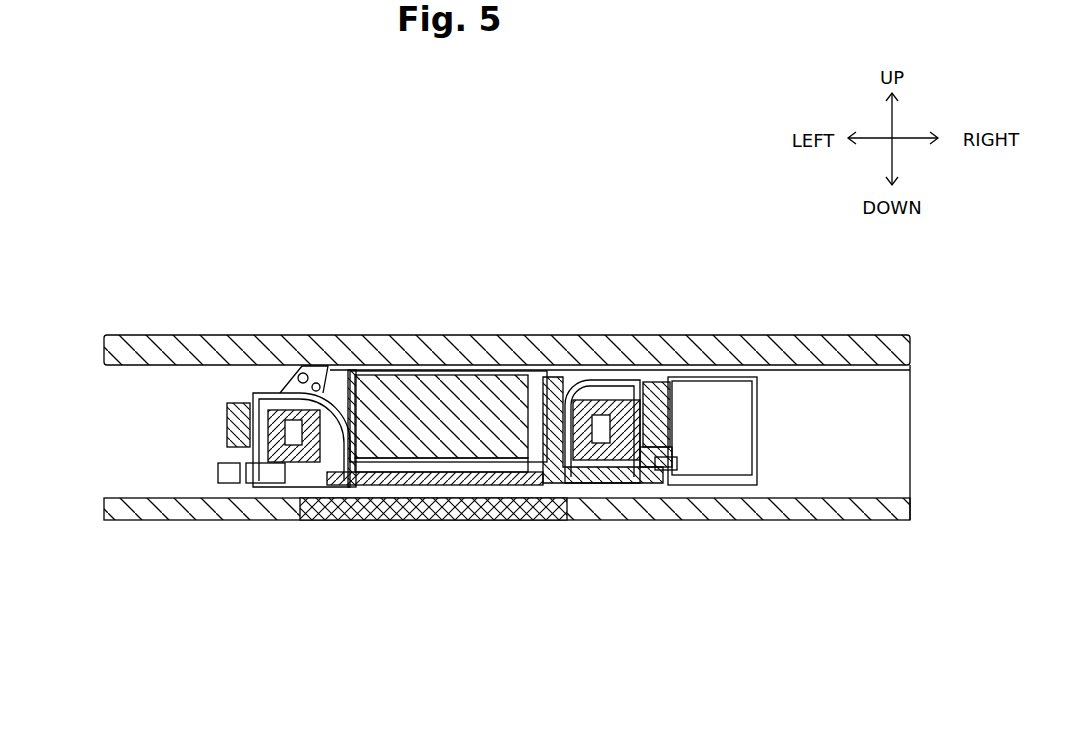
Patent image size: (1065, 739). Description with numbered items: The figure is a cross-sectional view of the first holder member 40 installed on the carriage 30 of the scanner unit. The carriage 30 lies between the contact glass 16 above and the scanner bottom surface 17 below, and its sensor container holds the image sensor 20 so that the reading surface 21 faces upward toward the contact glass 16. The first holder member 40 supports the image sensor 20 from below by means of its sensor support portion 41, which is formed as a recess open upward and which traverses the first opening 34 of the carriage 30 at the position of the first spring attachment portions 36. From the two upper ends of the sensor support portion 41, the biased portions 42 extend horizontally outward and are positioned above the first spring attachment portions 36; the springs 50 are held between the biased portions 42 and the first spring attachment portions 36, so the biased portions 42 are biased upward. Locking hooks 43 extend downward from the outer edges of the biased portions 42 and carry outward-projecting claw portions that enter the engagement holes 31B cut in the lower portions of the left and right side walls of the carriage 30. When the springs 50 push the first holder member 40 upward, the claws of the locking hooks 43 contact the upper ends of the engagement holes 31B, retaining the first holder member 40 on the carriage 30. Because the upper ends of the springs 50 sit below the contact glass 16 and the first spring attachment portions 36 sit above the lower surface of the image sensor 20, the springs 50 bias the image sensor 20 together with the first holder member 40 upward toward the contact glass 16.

The contact glass 16 is at (808, 347).
The scanner bottom surface 17 is at (832, 505).
The image sensor 20 is at (432, 395).
The reading surface 21 is at (494, 375).
The carriage 30 is at (731, 385).
The engagement holes 31B is at (225, 472).
The first opening 34 is at (549, 500).
The first spring attachment portions 36 is at (292, 487).
The first holder member 40 is at (556, 380).
The sensor support portion 41 is at (400, 486).
The biased portions 42 is at (300, 372).
The locking hooks 43 is at (252, 482).
The springs 50 is at (228, 410).